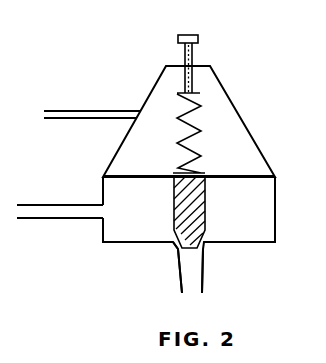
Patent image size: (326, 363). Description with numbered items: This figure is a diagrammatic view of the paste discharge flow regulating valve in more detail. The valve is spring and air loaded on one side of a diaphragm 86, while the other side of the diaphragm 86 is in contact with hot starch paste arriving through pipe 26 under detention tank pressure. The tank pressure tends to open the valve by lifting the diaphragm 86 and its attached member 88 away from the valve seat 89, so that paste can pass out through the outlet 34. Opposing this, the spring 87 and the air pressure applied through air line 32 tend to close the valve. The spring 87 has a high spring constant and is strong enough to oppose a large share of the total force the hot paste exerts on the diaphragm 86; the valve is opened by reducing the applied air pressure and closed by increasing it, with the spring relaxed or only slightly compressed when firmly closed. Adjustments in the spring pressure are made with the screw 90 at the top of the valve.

The pipe 26 is at (75, 205).
The air line 32 is at (110, 111).
The outlet conduit 34 is at (203, 266).
The diaphragm 86 is at (160, 176).
The spring 87 is at (201, 124).
The attached member 88 is at (206, 187).
The valve seat 89 is at (176, 249).
The screw 90 is at (198, 38).